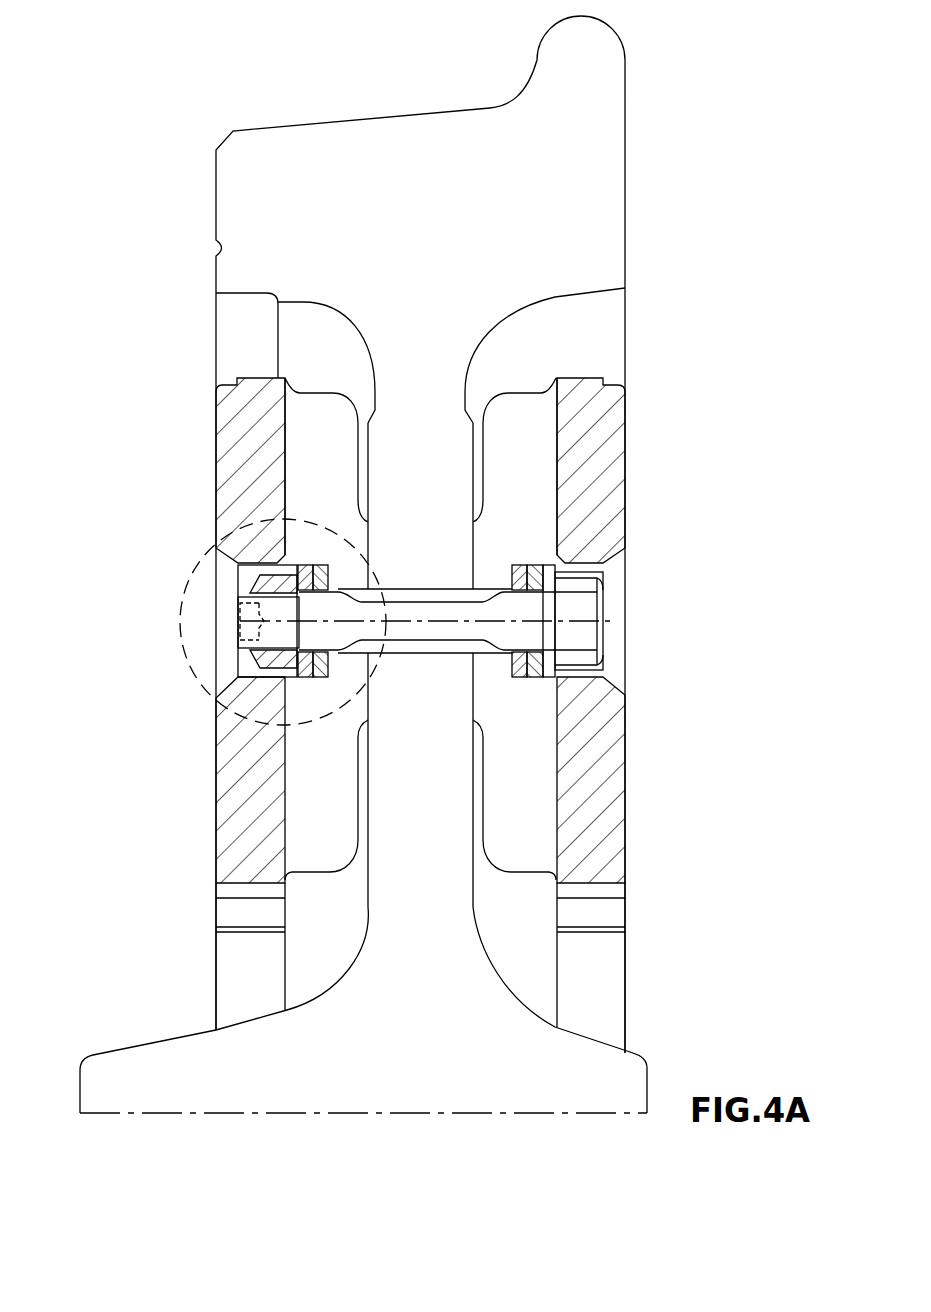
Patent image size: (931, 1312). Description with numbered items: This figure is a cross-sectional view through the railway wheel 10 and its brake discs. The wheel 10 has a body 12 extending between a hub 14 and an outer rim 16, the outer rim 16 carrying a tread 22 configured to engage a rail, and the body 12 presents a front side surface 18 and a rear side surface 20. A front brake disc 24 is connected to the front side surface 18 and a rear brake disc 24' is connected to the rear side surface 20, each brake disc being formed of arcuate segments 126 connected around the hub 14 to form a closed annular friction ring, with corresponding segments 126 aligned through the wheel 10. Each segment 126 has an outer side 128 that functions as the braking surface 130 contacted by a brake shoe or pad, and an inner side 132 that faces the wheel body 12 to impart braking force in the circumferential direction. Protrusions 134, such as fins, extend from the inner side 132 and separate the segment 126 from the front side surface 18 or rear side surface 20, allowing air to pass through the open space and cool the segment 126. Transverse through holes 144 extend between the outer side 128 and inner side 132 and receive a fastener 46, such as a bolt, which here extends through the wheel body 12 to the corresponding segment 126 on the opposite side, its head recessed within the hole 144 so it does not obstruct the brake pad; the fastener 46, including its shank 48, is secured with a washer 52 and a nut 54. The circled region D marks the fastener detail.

The railway wheel 10 is at (590, 163).
The body 12 is at (438, 743).
The hub 14 is at (628, 1087).
The outer rim 16 is at (354, 178).
The front side surface 18 is at (473, 540).
The rear side surface 20 is at (367, 533).
The tread 22 is at (100, 1115).
The front brake disc 24 is at (764, 329).
The rear brake disc 24' is at (155, 729).
The fastener 46 is at (420, 612).
The bolt shank 48 is at (421, 655).
The washer 52 is at (322, 565).
The nut 54 is at (272, 655).
The segment 126 is at (230, 485).
The outer side 128 is at (216, 850).
The braking surface 130 is at (625, 862).
The inner side 132 is at (285, 430).
The protrusions 134 is at (310, 327).
The transverse through holes 144 is at (233, 667).
The detail circle D is at (187, 585).